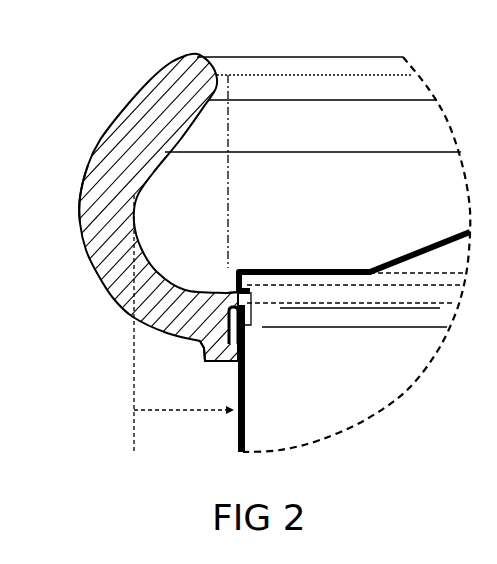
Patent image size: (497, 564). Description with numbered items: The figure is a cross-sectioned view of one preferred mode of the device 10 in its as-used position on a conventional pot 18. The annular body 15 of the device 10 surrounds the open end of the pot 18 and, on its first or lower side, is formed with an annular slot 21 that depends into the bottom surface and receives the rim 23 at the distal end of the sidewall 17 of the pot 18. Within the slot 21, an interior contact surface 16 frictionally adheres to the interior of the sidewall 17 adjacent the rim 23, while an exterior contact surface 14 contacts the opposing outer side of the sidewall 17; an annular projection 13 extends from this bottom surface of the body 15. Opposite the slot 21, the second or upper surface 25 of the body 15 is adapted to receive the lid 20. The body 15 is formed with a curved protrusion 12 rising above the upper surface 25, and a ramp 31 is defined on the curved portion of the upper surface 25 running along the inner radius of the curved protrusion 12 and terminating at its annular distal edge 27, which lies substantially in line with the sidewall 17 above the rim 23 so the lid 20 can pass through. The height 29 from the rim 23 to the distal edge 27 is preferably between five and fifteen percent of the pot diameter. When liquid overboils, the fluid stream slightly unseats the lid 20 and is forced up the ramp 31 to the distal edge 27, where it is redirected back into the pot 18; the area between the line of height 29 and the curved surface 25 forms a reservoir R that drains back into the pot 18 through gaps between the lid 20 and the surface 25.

The device 10 is at (248, 282).
The curved protrusion 12 is at (122, 277).
The annular projection 13 is at (232, 362).
The exterior contact surface 14 is at (205, 350).
The annular body 15 is at (90, 270).
The interior contact surface 16 is at (257, 312).
The sidewall 17 is at (238, 455).
The pot 18 is at (234, 417).
The lid 20 is at (313, 266).
The slot 21 is at (244, 317).
The rim 23 is at (236, 294).
The upper surface 25 is at (222, 248).
The distal edge 27 is at (290, 75).
The height 29 is at (240, 190).
The ramp 31 is at (158, 170).